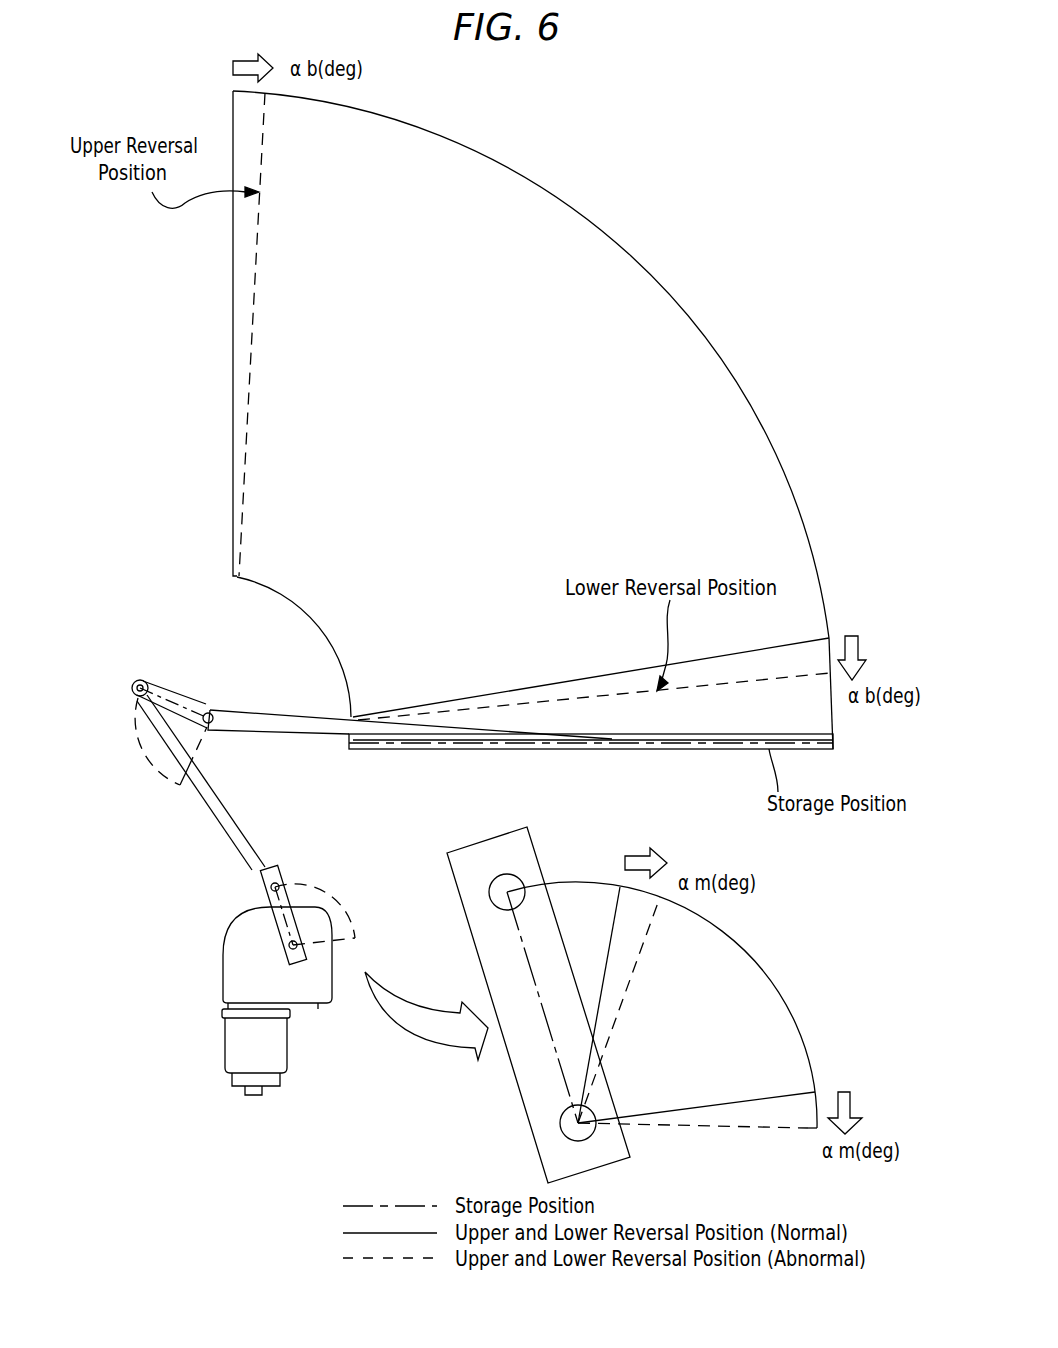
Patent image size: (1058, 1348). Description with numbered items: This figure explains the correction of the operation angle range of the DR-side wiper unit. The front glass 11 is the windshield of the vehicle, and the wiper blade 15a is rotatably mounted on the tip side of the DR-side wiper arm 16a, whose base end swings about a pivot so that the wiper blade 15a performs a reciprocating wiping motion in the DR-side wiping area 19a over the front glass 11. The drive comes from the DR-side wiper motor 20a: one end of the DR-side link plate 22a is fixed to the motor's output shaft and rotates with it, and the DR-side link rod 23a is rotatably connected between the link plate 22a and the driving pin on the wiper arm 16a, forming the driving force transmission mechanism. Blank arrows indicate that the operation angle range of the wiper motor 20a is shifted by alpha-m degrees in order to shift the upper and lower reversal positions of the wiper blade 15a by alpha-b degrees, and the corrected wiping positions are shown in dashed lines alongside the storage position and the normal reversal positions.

The front glass 11 is at (492, 432).
The DR-side wiping area 19a is at (658, 282).
The wiper blade 15a is at (672, 749).
The DR-side wiper arm 16a is at (257, 720).
The DR-side link rod 23a is at (214, 817).
The DR-side link plate 22a is at (281, 921).
The DR-side wiper motor 20a is at (204, 1073).